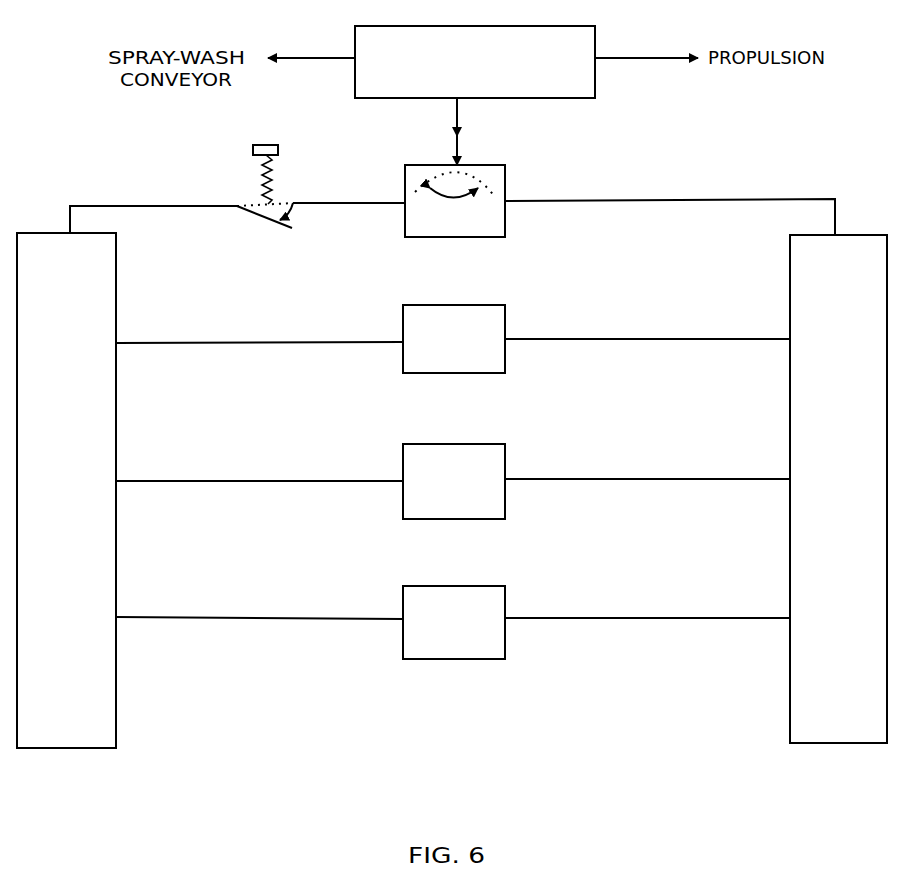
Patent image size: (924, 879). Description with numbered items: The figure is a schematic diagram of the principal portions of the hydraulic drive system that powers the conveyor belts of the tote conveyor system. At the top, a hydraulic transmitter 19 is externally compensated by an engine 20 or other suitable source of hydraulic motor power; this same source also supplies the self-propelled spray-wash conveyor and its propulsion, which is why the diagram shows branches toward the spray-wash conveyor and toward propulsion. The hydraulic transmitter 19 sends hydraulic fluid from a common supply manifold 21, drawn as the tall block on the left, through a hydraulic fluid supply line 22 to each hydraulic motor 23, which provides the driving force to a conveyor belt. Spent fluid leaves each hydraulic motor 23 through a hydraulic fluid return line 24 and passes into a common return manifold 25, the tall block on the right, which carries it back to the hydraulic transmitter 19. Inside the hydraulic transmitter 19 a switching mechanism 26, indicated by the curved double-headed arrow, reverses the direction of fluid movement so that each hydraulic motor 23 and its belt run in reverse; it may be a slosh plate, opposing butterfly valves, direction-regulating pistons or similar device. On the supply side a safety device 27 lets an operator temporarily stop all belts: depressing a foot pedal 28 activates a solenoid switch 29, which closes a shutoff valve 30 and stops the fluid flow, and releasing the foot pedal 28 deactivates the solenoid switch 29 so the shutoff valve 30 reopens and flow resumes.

The hydraulic transmitter 19 is at (465, 228).
The engine 20 is at (545, 85).
The common supply manifold 21 is at (98, 673).
The hydraulic fluid supply line 22 is at (218, 343).
The hydraulic motor 23 is at (458, 368).
The hydraulic fluid return line 24 is at (613, 340).
The common return manifold 25 is at (833, 730).
The switching mechanism 26 is at (455, 180).
The safety device 27 is at (245, 198).
The foot pedal 28 is at (280, 150).
The solenoid switch 29 is at (277, 175).
The shutoff valve 30 is at (255, 213).